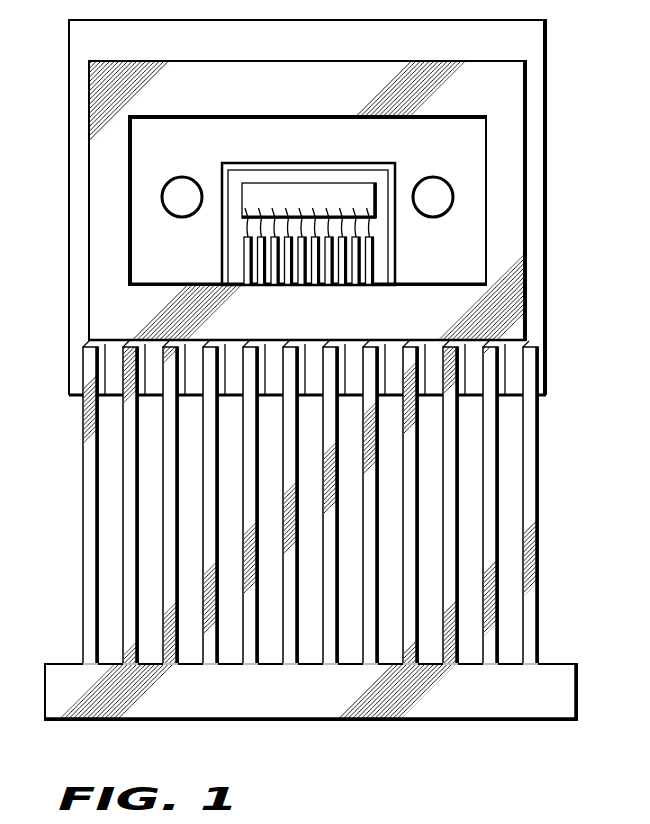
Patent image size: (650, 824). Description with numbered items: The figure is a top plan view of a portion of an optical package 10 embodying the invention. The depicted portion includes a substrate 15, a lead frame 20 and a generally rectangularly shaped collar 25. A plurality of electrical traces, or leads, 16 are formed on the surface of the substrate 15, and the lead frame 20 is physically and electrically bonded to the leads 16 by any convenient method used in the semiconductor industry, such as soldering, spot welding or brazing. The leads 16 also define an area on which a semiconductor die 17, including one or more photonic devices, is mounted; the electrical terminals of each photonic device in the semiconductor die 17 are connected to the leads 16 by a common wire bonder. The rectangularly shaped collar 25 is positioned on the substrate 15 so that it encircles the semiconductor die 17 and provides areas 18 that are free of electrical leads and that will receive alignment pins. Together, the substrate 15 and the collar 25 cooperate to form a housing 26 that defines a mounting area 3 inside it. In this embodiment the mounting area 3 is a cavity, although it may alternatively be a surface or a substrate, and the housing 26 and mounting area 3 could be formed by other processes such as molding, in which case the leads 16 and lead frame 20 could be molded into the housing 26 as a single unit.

The mounting area 3 is at (308, 206).
The optical package 10 is at (311, 760).
The substrate 15 is at (546, 42).
The electrical traces, or leads 16 is at (363, 163).
The semiconductor die 17 is at (268, 188).
The areas 18 is at (169, 183).
The lead frame 20 is at (578, 684).
The collar 25 is at (97, 273).
The housing 26 is at (69, 78).